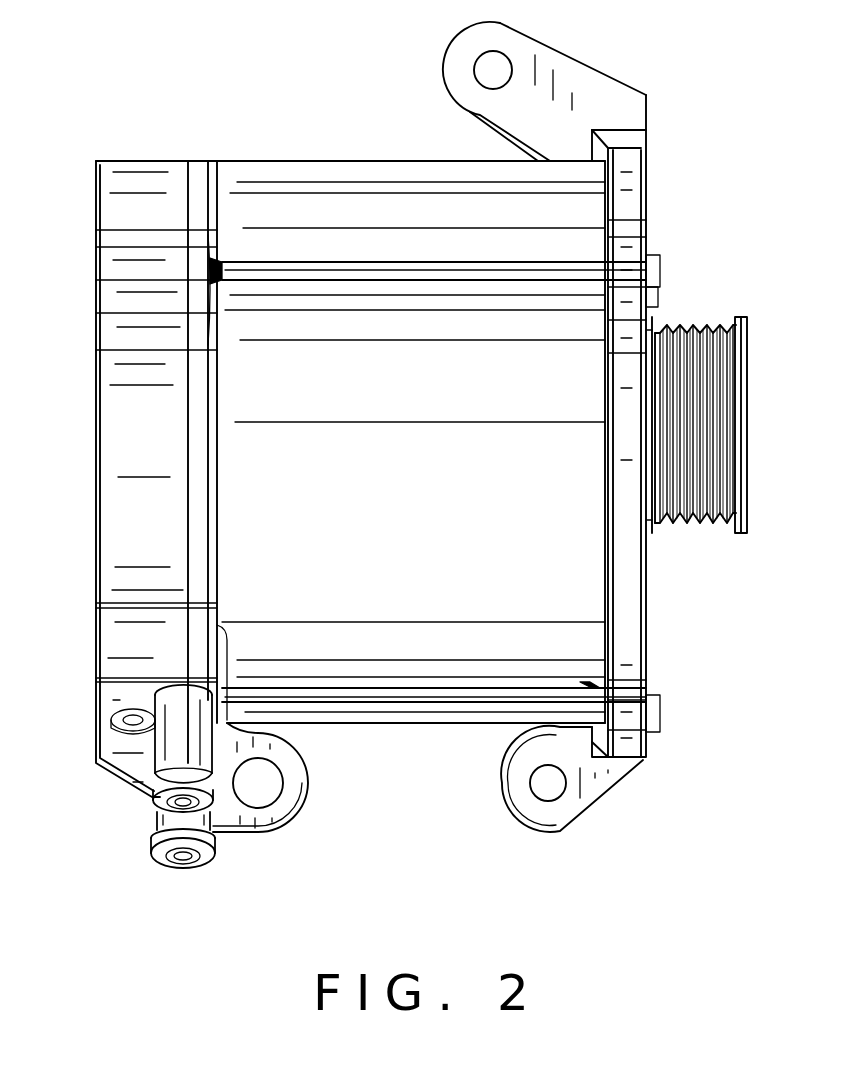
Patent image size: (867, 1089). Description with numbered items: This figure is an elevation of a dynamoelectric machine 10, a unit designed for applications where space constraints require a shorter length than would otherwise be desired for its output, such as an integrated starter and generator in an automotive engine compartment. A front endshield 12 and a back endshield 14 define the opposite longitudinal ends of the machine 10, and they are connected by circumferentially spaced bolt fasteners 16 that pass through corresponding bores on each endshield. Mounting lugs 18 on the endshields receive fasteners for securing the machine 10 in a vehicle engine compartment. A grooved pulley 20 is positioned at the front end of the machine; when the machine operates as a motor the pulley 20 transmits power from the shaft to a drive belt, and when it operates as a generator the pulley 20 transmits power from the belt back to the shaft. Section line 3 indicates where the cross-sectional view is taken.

The dynamoelectric machine 10 is at (677, 98).
The front endshield 12 is at (647, 685).
The back endshield 14 is at (96, 645).
The bolt fasteners 16 is at (372, 262).
The mounting lugs 18 is at (443, 68).
The grooved pulley 20 is at (705, 327).
The section line 3- 3 is at (82, 420).